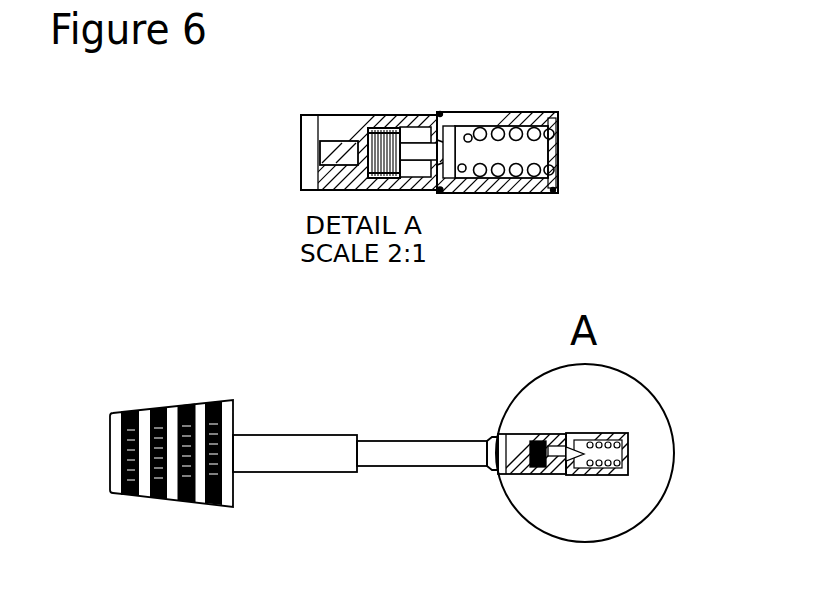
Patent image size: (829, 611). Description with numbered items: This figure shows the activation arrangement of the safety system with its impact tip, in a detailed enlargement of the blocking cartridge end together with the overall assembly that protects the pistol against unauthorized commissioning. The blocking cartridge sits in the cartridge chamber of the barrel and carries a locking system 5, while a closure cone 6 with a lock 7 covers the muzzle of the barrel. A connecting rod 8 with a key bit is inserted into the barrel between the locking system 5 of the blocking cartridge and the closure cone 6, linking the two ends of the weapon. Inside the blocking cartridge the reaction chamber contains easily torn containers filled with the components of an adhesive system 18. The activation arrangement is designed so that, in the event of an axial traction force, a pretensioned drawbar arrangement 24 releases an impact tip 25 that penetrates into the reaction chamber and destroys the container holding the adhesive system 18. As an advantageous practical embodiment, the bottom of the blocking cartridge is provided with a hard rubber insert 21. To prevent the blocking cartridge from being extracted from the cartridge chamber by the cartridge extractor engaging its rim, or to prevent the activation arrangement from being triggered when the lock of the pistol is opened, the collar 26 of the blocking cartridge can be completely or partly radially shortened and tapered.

The locking system 5 is at (508, 428).
The closure cone 6 is at (172, 432).
The lock 7 is at (186, 453).
The connecting rod 8 is at (393, 452).
The adhesive system 18 is at (508, 127).
The hard rubber insert 21 is at (568, 136).
The pretensioned drawbar arrangement 24 is at (384, 128).
The impact tip 25 is at (466, 148).
The collar 26 is at (560, 97).